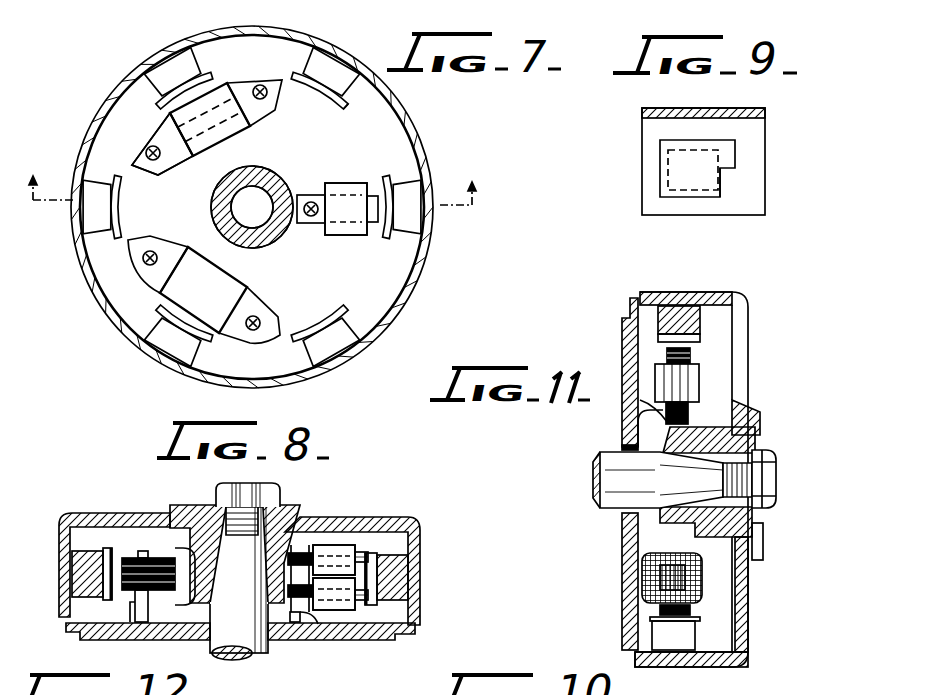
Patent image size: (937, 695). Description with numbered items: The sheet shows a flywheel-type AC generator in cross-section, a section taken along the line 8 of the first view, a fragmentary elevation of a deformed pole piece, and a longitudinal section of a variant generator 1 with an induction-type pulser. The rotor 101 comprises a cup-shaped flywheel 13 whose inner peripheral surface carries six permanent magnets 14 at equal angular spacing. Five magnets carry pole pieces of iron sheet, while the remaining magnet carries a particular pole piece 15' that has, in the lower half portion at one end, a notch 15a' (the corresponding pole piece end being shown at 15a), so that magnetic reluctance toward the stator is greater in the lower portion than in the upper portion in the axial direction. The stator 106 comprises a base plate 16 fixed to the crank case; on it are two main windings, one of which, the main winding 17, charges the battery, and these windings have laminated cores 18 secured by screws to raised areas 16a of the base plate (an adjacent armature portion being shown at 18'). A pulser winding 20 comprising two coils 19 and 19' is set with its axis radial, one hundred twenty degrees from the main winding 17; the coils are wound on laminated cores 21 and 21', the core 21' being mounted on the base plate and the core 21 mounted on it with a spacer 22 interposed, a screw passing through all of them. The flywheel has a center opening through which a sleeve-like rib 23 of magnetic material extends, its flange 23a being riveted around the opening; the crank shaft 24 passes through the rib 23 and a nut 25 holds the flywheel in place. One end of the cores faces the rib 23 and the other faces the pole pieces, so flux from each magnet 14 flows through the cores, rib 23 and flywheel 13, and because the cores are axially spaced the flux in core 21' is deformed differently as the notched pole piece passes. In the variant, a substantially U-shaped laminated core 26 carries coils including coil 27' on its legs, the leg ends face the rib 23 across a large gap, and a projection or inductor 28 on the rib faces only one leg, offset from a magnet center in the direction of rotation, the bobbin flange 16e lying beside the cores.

In FIG. 11, the stepping motor assembly 1 is at (704, 298).
In FIG. 7, the section line 8- 8 is at (255, 176).
In FIG. 7, the cup-shaped flywheel 13 is at (413, 285).
In FIG. 9, the cup-shaped flywheel 13 is at (758, 129).
In FIG. 11, the cup-shaped flywheel 13 is at (748, 607).
In FIG. 9, the permanent magnet 14 is at (692, 148).
In FIG. 7, the particular pole piece 15' is at (317, 104).
In FIG. 9, the particular pole piece 15' is at (658, 168).
In FIG. 7, the pole plate end tab 15a is at (370, 126).
In FIG. 9, the notch 15a' is at (772, 191).
In FIG. 11, the base plate 16 is at (622, 542).
In FIG. 8, the base plate 16 is at (368, 643).
In FIG. 11, the raised area 16a is at (642, 582).
In FIG. 8, the raised area 16a is at (135, 612).
In FIG. 11, the bobbin flange 16e is at (642, 414).
In FIG. 8, the bobbin flange 16e is at (315, 624).
In FIG. 11, the main winding 17 is at (650, 612).
In FIG. 8, the main winding 17 is at (165, 552).
In FIG. 7, the laminated core 18 is at (207, 87).
In FIG. 11, the laminated core 18 is at (716, 651).
In FIG. 8, the laminated core 18 is at (155, 629).
In FIG. 7, the armature 18' is at (204, 276).
In FIG. 7, the coil 19 is at (345, 225).
In FIG. 8, the coil 19 is at (349, 527).
In FIG. 8, the coil 19' is at (369, 545).
In FIG. 7, the pulser winding 20 is at (336, 184).
In FIG. 8, the pulser winding 20 is at (355, 488).
In FIG. 7, the laminated core 21 is at (305, 231).
In FIG. 8, the laminated core 21 is at (320, 544).
In FIG. 8, the laminated core 21' is at (294, 645).
In FIG. 8, the spacer 22 is at (292, 578).
In FIG. 7, the rib 23 is at (272, 182).
In FIG. 11, the rib 23 is at (727, 518).
In FIG. 8, the rib 23 is at (192, 607).
In FIG. 11, the flange 23a is at (763, 548).
In FIG. 8, the flange 23a is at (187, 507).
In FIG. 7, the crank shaft 24 is at (223, 184).
In FIG. 11, the crank shaft 24 is at (592, 497).
In FIG. 8, the crank shaft 24 is at (232, 660).
In FIG. 11, the nut 25 is at (776, 480).
In FIG. 8, the nut 25 is at (273, 496).
In FIG. 11, the laminated core 26 is at (690, 354).
In FIG. 11, the coil 27' is at (731, 394).
In FIG. 11, the inductor 28 is at (745, 425).
In FIG. 7, the rotor 101 is at (428, 252).
In FIG. 7, the stator 106 is at (170, 192).